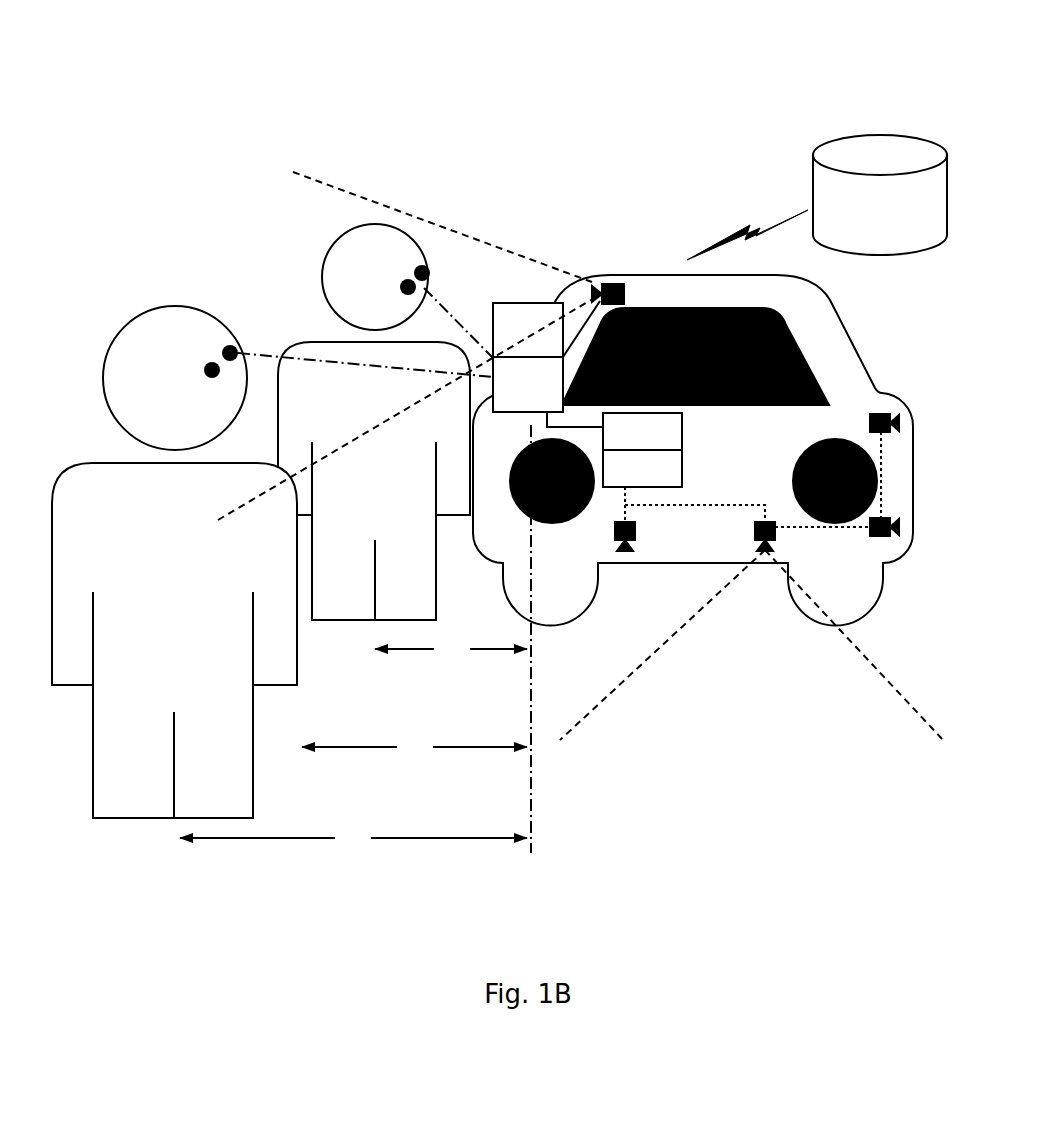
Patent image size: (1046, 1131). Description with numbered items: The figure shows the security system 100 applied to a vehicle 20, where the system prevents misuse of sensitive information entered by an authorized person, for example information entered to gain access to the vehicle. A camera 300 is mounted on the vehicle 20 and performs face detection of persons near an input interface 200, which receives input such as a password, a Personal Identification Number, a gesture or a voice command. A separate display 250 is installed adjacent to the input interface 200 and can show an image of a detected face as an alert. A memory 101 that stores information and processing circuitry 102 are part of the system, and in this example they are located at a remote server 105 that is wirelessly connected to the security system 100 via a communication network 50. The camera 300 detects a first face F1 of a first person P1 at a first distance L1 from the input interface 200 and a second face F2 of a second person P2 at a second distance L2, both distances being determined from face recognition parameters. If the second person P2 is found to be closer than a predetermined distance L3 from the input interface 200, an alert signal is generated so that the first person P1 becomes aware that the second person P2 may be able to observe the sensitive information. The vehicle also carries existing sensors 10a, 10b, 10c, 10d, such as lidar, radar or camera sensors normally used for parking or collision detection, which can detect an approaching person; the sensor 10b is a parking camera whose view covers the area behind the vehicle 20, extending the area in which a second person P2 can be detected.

The security system 100 is at (588, 107).
The vehicle 20 is at (878, 373).
The camera 300 is at (619, 281).
The display 250 is at (528, 330).
The input interface 200 is at (548, 364).
The memory 101 is at (642, 431).
The processing circuitry 102 is at (684, 486).
The server 105 is at (880, 195).
The communication network 50 is at (747, 222).
The sensor 10a is at (655, 536).
The parking camera 10b is at (752, 632).
The sensor 10c is at (858, 464).
The sensor 10d is at (869, 546).
The first face F1 is at (425, 243).
The second face F2 is at (227, 318).
The first person P1 is at (374, 481).
The second person P2 is at (174, 640).
The first distance L1 is at (451, 650).
The second distance L2 is at (353, 839).
The predetermined distance L3 is at (414, 748).